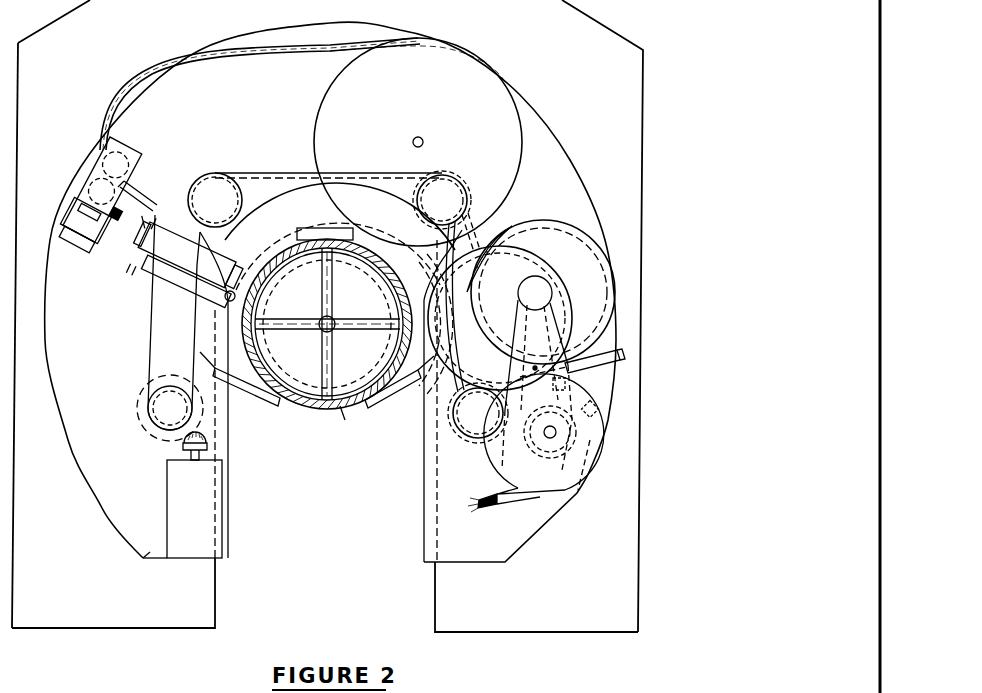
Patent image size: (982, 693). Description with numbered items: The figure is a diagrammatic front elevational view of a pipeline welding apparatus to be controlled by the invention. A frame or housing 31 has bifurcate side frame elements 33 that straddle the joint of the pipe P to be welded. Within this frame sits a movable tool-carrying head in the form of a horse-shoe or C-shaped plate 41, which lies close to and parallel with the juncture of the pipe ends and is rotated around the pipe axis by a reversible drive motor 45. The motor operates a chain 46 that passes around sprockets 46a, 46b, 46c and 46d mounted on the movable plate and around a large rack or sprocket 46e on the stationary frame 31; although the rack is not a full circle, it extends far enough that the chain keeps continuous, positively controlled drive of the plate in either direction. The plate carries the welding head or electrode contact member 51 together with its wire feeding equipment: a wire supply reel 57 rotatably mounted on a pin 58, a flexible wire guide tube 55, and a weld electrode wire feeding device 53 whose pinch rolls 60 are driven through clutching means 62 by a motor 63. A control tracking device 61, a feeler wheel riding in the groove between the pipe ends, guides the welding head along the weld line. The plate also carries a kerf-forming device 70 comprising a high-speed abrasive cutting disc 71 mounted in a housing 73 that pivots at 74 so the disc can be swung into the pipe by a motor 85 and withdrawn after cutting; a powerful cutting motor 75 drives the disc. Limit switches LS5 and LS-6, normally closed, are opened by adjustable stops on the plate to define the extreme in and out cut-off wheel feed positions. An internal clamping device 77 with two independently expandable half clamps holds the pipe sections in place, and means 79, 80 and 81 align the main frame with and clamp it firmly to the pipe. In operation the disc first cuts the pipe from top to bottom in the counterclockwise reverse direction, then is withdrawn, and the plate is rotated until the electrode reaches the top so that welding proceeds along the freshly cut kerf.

The frame or housing 31 is at (645, 104).
The bifurcate side frame elements 33 is at (170, 630).
The C-shaped plate or frame member 41 is at (140, 552).
The reversible drive motor 45 is at (229, 519).
The chain 46 is at (152, 330).
The sprocket 46a is at (148, 422).
The sprocket 46b is at (192, 184).
The sprocket 46c is at (462, 184).
The sprocket 46d is at (470, 432).
The rack or sprocket 46e is at (258, 198).
The welding head 51 is at (233, 250).
The weld electrode wire feeding device 53 is at (130, 148).
The flexible wire guide tube 55 is at (235, 58).
The wire supply reel 57 is at (494, 70).
The pin 58 is at (432, 127).
The pinch rolls 60 is at (80, 176).
The control tracking device 61 is at (226, 298).
The clutching means 62 is at (124, 203).
The motor 63 is at (80, 232).
The kerf-forming device 70 is at (575, 217).
The abrasive cutting disc 71 is at (500, 230).
The housing 73 is at (584, 230).
The pivot 74 is at (550, 440).
The cutting motor 75 is at (580, 490).
The internal clamping device 77 is at (310, 408).
The aligning and clamping means 79 is at (262, 404).
The aligning and clamping means 80 is at (392, 406).
The aligning and clamping means 81 is at (297, 228).
The motor 85 is at (622, 351).
The pipe P is at (345, 413).
The limit switch LS5 is at (565, 384).
The limit switch LS-6 is at (596, 412).